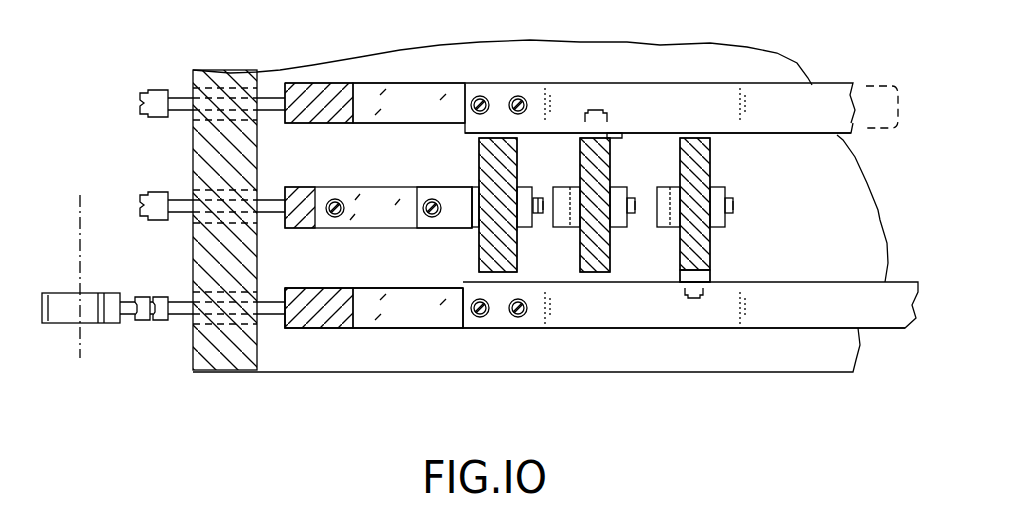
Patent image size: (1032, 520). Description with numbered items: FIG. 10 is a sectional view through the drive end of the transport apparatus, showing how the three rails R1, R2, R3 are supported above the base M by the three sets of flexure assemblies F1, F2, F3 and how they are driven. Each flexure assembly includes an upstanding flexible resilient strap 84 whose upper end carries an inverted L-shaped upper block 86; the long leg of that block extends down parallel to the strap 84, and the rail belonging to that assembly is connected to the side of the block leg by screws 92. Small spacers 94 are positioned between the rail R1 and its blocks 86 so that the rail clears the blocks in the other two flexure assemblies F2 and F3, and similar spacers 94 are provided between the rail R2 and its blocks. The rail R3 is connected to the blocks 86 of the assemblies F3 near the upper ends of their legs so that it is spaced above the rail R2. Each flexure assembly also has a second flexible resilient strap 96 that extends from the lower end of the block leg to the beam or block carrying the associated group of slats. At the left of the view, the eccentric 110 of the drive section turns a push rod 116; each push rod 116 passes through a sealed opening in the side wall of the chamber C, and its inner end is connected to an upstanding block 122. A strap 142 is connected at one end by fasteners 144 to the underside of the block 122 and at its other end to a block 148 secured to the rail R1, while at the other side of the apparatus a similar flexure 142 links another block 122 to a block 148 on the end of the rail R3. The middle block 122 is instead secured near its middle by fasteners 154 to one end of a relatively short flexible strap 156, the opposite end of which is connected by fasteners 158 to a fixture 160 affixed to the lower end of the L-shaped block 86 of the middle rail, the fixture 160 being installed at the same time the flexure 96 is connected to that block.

The strap 84 is at (533, 218).
The upper block 86 is at (507, 183).
The screws 92 is at (600, 114).
The spacers 94 is at (627, 133).
The second strap 96 is at (468, 217).
The eccentric 110 is at (97, 325).
The push rod 116 is at (181, 193).
The upstanding block 122 is at (317, 88).
The strap 142 is at (392, 92).
The fasteners 144 is at (323, 287).
The block 148 is at (500, 98).
The fasteners 154 is at (335, 200).
The short flexible strap 156 is at (380, 202).
The fasteners 158 is at (435, 213).
The fixture 160 is at (460, 198).
The chamber C is at (202, 370).
The base M is at (297, 373).
The rail R1 is at (897, 320).
The rail R2 is at (830, 102).
The rail R3 is at (878, 100).
The flexure assemblies F1 is at (717, 262).
The flexure assemblies F2 is at (617, 262).
The flexure assemblies F3 is at (525, 259).